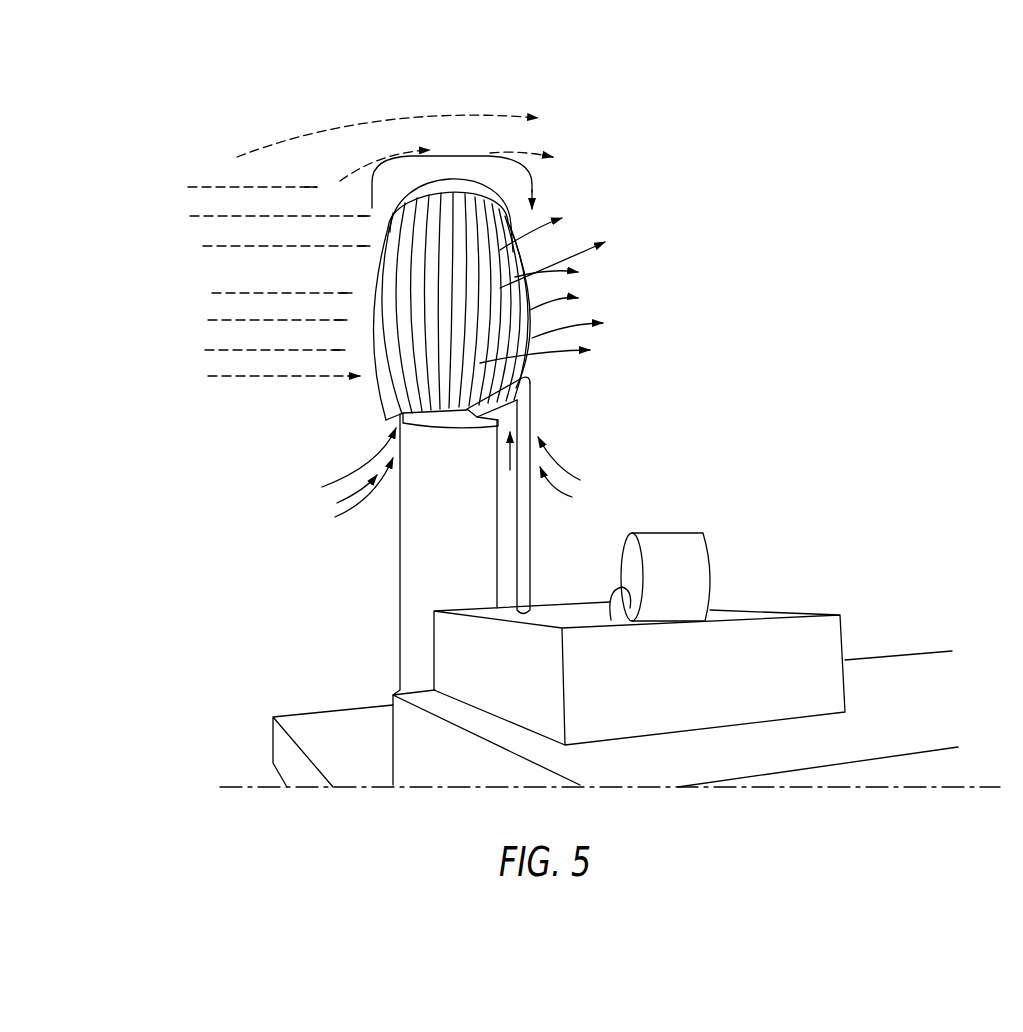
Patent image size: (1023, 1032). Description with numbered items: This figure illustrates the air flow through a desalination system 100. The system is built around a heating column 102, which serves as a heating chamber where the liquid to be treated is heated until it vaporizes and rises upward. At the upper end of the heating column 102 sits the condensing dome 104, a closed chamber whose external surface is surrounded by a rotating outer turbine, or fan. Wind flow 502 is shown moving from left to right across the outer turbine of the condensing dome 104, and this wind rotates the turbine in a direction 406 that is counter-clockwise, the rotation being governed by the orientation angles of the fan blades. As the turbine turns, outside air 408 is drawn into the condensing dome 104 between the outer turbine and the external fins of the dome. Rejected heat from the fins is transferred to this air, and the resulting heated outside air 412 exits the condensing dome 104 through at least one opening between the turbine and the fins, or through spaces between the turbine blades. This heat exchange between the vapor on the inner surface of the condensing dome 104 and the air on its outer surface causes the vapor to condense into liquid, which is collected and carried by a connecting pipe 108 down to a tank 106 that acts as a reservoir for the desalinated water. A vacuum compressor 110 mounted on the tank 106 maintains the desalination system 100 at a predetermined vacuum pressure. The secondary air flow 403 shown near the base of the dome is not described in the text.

The desalination system 100 is at (218, 152).
The wind flow 502 is at (226, 247).
The direction 406 is at (533, 186).
The heated outside air 412 is at (587, 295).
The condensing dome 104 is at (375, 393).
The outside air 408 is at (340, 480).
The secondary inlet airflow 403 is at (570, 468).
The connecting pipe 108 is at (532, 517).
The heating column 102 is at (397, 590).
The vacuum compressor 110 is at (710, 557).
The tank 106 is at (843, 627).